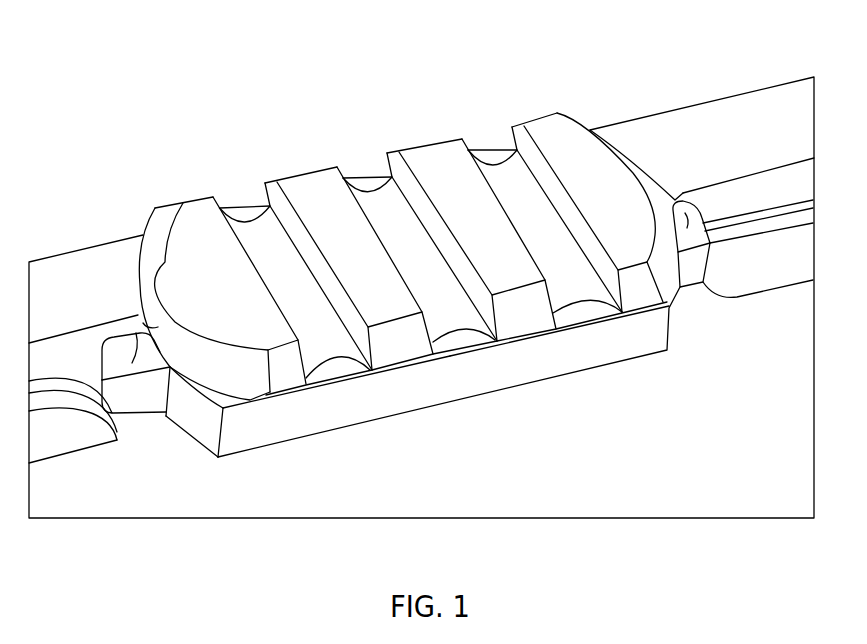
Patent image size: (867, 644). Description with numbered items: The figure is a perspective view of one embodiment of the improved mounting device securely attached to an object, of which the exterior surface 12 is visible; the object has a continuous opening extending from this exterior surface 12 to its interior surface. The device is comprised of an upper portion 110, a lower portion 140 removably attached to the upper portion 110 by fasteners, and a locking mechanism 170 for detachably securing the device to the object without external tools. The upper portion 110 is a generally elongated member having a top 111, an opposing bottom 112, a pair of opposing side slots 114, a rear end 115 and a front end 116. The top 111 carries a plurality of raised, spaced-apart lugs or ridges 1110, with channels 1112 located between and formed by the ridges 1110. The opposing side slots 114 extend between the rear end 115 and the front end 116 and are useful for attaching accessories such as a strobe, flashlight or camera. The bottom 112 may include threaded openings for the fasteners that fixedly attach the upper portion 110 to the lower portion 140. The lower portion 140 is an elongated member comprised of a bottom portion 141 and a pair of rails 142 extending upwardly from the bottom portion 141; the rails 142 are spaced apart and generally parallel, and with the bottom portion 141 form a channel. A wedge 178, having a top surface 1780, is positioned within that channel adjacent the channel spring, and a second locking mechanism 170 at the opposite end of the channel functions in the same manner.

The exterior surface 12 is at (752, 370).
The upper portion 110 is at (558, 109).
The top 111 is at (186, 200).
The bottom 112 is at (188, 393).
The side slots 114 is at (266, 420).
The rear end 115 is at (135, 332).
The front end 116 is at (682, 187).
The lower portion 140 is at (202, 449).
The bottom portion 141 is at (503, 391).
The rails 142 is at (552, 360).
The locking mechanism 170 is at (135, 421).
The wedge 178 is at (103, 345).
The top surface 1780 is at (135, 332).
The ridges 1110 is at (236, 282).
The channels 1112 is at (306, 297).